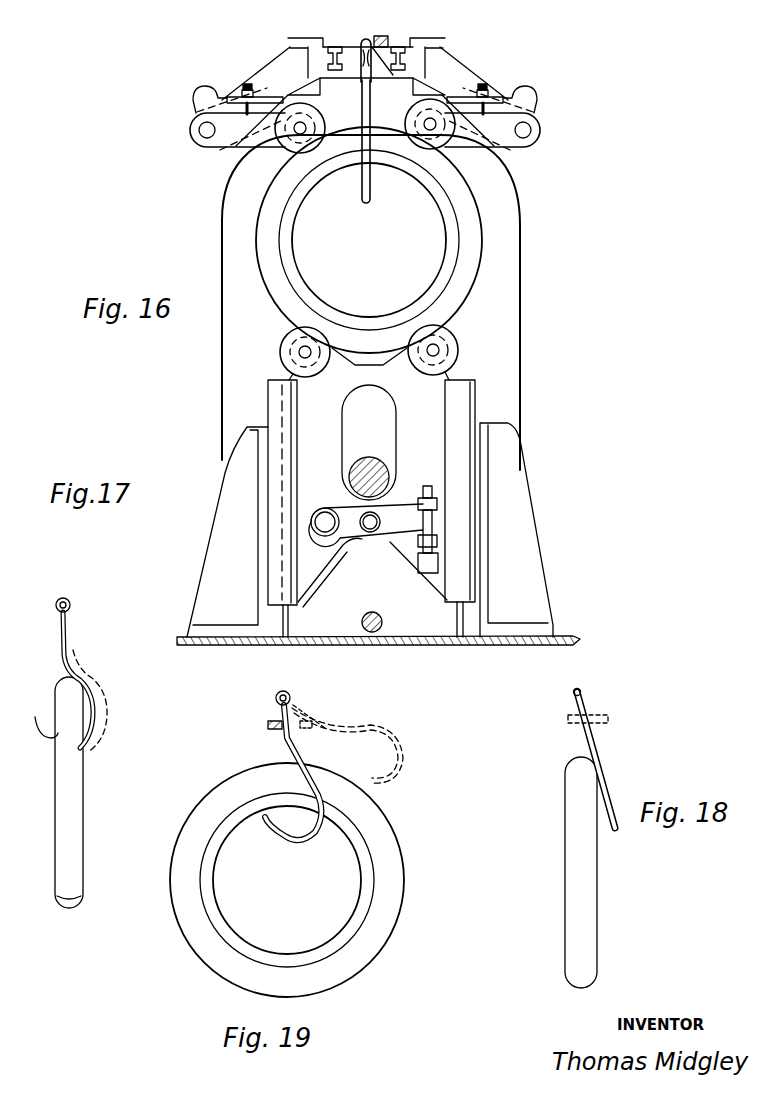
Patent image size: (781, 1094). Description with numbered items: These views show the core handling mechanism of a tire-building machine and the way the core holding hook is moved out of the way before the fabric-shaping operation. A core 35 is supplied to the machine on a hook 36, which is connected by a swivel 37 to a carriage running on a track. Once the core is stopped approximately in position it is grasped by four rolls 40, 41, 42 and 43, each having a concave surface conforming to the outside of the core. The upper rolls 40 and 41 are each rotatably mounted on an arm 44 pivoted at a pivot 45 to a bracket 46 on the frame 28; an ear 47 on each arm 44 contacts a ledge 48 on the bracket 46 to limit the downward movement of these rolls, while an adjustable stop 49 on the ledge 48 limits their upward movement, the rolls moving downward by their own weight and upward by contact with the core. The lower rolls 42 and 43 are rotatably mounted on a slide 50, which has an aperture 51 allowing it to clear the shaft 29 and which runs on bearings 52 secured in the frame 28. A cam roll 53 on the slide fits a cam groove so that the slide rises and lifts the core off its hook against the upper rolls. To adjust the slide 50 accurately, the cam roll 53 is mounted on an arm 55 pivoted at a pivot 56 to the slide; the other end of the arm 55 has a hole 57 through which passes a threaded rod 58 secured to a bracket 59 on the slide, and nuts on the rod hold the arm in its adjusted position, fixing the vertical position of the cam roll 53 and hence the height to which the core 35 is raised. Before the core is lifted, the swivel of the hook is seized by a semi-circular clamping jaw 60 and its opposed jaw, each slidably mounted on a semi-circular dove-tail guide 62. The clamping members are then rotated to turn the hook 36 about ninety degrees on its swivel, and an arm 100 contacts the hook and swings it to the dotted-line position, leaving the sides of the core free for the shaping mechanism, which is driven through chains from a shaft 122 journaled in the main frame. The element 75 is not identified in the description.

In FIG. 16, the frame 28 is at (518, 270).
In FIG. 16, the shaft 29 is at (386, 468).
In FIG. 16, the core 35 is at (272, 258).
In FIG. 17, the core 35 is at (77, 810).
In FIG. 19, the core 35 is at (393, 867).
In FIG. 18, the core 35 is at (587, 913).
In FIG. 16, the hook 36 is at (362, 186).
In FIG. 17, the hook 36 is at (66, 648).
In FIG. 19, the hook 36 is at (298, 845).
In FIG. 18, the hook 36 is at (606, 780).
In FIG. 16, the swivel 37 is at (362, 78).
In FIG. 17, the swivel 37 is at (70, 603).
In FIG. 19, the swivel 37 is at (290, 694).
In FIG. 18, the swivel 37 is at (582, 689).
In FIG. 16, the roll 40 is at (293, 147).
In FIG. 16, the roll 41 is at (447, 138).
In FIG. 16, the roll 42 is at (282, 353).
In FIG. 16, the roll 43 is at (458, 350).
In FIG. 16, the arm 44 is at (235, 150).
In FIG. 16, the pivot 45 is at (202, 135).
In FIG. 16, the bracket 46 is at (283, 50).
In FIG. 16, the ear 47 is at (197, 104).
In FIG. 16, the ledge 48 is at (233, 84).
In FIG. 16, the adjustable stop 49 is at (291, 94).
In FIG. 16, the slide 50 is at (371, 508).
In FIG. 16, the aperture 51 is at (349, 432).
In FIG. 16, the bearing 52 is at (370, 530).
In FIG. 16, the cam roll 53 is at (372, 534).
In FIG. 16, the arm 55 is at (343, 565).
In FIG. 16, the pivot 56 is at (325, 508).
In FIG. 16, the hole 57 is at (422, 522).
In FIG. 16, the threaded rod 58 is at (427, 486).
In FIG. 16, the bracket 59 is at (424, 580).
In FIG. 16, the clamping jaw 60 is at (437, 503).
In FIG. 16, the semi-circular dove-tail guide 62 is at (351, 46).
In FIG. 16, the clamp insert 75 is at (385, 36).
In FIG. 19, the arm 100 is at (267, 722).
In FIG. 18, the arm 100 is at (604, 716).
In FIG. 16, the shaft 122 is at (361, 622).